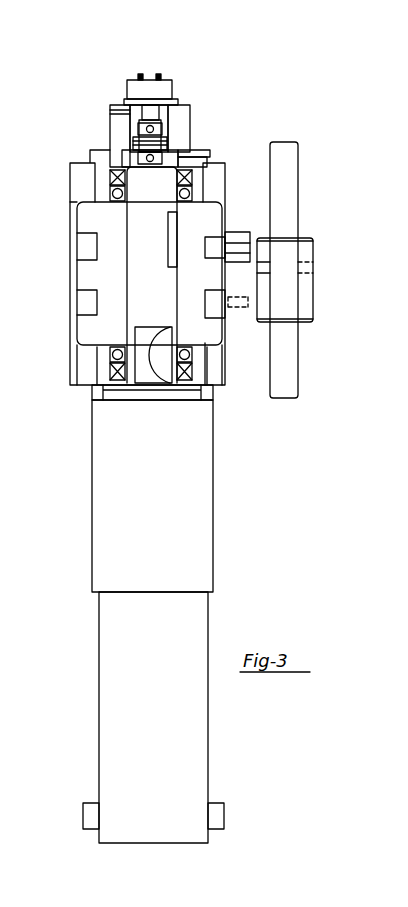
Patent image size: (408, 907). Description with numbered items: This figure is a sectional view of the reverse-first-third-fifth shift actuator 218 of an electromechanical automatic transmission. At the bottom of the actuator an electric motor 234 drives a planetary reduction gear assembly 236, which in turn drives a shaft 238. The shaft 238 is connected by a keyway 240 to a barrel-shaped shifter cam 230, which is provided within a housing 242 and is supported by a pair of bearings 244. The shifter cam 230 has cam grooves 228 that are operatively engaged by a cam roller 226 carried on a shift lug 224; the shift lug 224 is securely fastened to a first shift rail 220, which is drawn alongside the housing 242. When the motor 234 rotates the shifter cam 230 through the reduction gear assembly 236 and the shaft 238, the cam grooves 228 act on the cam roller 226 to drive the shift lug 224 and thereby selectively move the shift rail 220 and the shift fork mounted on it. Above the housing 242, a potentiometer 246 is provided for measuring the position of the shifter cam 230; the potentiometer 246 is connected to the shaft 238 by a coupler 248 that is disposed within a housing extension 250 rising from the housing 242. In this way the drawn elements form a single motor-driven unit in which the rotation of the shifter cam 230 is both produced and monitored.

The R-1-3-5 shift actuator 218 is at (207, 132).
The first shift rail 220 is at (283, 212).
The shift lug 224 is at (303, 304).
The cam roller 226 is at (216, 245).
The cam grooves 228 is at (85, 232).
The barrel-shaped shifter cam 230 is at (195, 222).
The electric motor 234 is at (155, 752).
The planetary reduction gear assembly 236 is at (160, 512).
The shaft 238 is at (137, 312).
The keyway 240 is at (145, 247).
The housing 242 is at (85, 187).
The bearings 244 is at (116, 180).
The potentiometer 246 is at (150, 92).
The coupler 248 is at (145, 122).
The housing extension 250 is at (120, 127).